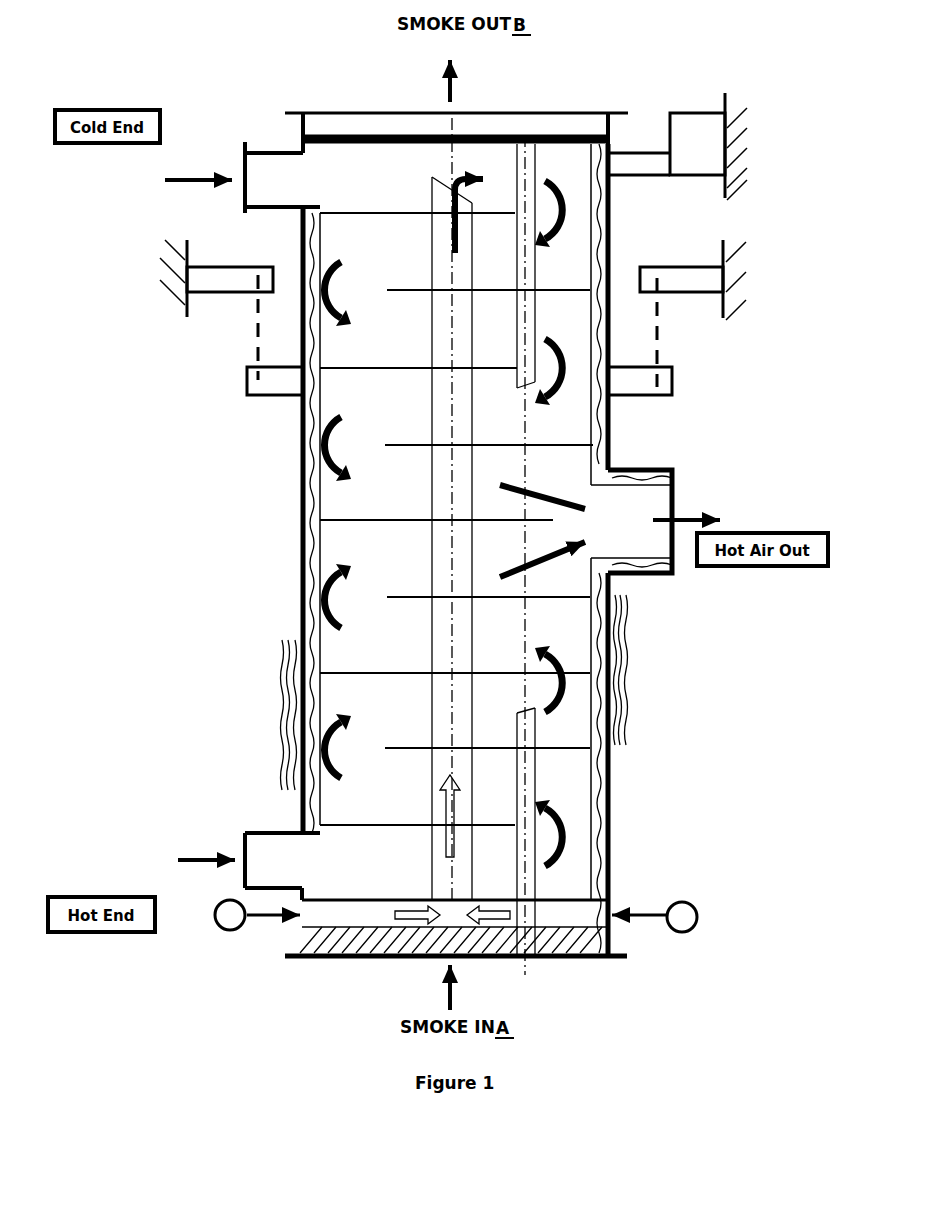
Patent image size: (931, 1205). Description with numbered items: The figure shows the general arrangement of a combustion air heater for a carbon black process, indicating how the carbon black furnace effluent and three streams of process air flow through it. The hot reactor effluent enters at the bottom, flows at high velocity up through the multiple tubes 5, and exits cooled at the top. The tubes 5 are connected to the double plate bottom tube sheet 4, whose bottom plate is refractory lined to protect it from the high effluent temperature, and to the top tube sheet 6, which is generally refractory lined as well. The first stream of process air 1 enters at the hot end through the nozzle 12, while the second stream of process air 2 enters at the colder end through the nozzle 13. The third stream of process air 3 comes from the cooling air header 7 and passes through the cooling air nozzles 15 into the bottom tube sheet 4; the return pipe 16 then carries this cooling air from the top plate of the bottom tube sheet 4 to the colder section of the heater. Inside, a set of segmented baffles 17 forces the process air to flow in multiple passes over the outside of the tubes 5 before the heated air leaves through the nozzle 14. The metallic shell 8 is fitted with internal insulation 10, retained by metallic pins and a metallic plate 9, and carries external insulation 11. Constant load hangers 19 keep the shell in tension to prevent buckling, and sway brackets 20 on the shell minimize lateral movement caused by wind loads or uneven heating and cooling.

The first stream of process air 1 is at (185, 860).
The second stream of process air 2 is at (168, 181).
The third stream of process air 3 is at (251, 933).
The double plate bottom tube sheet 4 is at (350, 913).
The tubes 5 is at (527, 797).
The top tube sheet 6 is at (490, 133).
The cooling air header 7 is at (697, 895).
The metallic shell 8 is at (303, 418).
The metallic plate 9 is at (590, 222).
The internal insulation 10 is at (308, 482).
The external insulation 11 is at (617, 660).
The nozzle 12 is at (280, 860).
The nozzle 13 is at (277, 177).
The nozzle 14 is at (628, 520).
The cooling air nozzles 15 is at (640, 912).
The return pipe 16 is at (452, 535).
The baffles 17 is at (405, 595).
The constant load hangers 19 is at (677, 278).
The sway brackets 20 is at (695, 148).